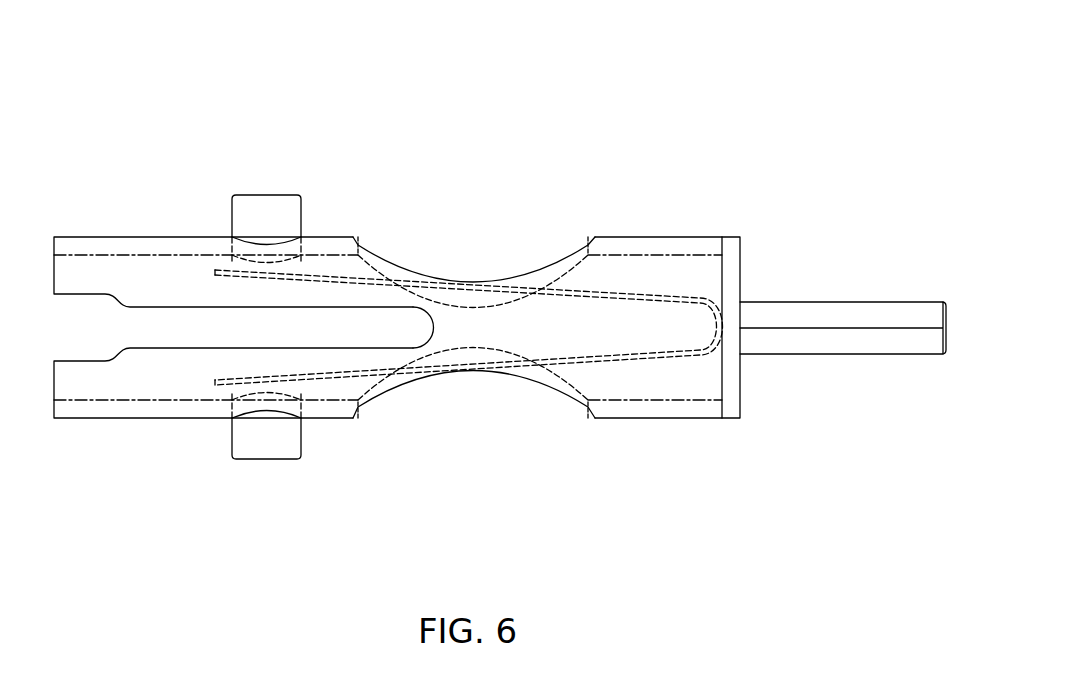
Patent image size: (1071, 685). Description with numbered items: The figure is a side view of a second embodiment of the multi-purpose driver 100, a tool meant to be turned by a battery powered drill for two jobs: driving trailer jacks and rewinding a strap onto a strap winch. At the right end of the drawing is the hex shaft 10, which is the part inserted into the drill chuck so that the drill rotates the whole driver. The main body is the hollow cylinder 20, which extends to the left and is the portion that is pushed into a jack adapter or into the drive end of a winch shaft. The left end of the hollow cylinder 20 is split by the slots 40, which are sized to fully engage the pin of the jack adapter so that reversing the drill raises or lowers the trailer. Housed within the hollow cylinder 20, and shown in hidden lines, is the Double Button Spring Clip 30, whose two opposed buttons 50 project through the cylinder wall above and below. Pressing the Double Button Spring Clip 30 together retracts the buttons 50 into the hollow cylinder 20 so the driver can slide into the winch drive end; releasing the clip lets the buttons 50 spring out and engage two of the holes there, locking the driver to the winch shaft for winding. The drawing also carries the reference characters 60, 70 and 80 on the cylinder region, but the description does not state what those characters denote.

The multi-purpose driver 100 is at (724, 92).
The hex shaft 10 is at (840, 302).
The hollow cylinder 20 is at (120, 237).
The Double Button Spring Clip 30 is at (458, 363).
The slots 40 is at (78, 362).
The buttons 50 is at (267, 195).
The waist recess 60 is at (388, 258).
The coupling end 70 is at (789, 204).
The forked end 80 is at (82, 208).